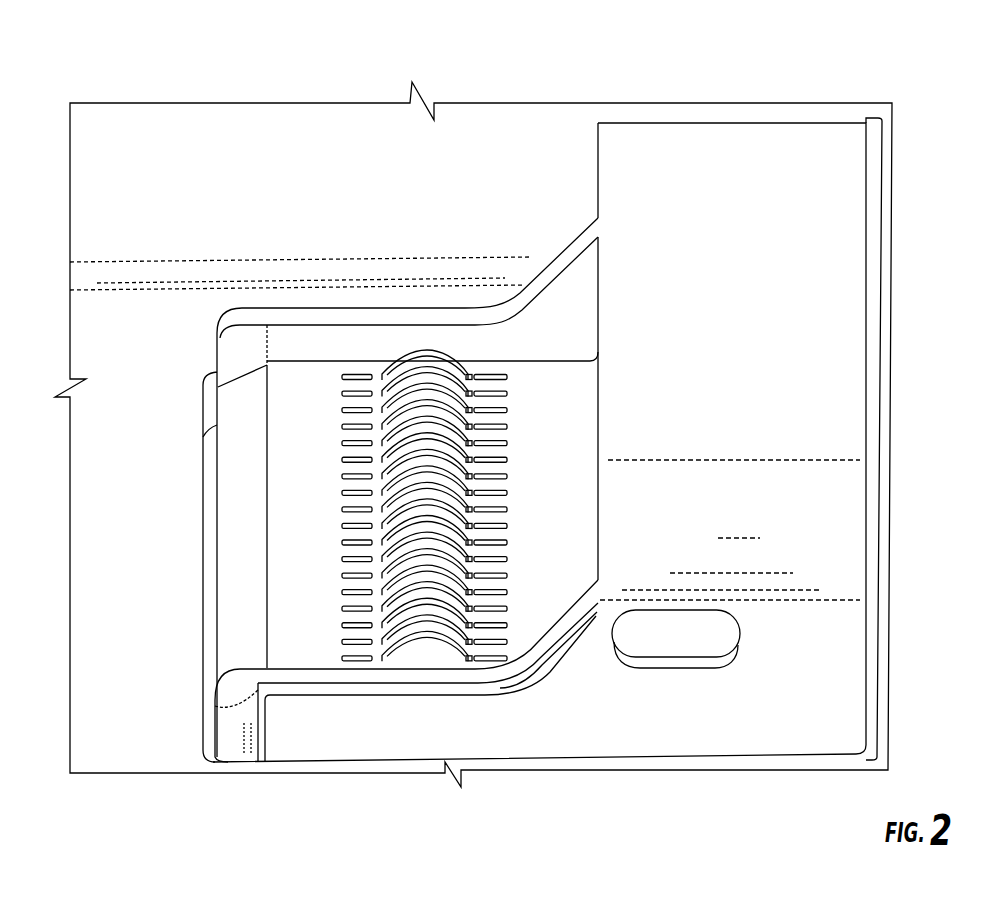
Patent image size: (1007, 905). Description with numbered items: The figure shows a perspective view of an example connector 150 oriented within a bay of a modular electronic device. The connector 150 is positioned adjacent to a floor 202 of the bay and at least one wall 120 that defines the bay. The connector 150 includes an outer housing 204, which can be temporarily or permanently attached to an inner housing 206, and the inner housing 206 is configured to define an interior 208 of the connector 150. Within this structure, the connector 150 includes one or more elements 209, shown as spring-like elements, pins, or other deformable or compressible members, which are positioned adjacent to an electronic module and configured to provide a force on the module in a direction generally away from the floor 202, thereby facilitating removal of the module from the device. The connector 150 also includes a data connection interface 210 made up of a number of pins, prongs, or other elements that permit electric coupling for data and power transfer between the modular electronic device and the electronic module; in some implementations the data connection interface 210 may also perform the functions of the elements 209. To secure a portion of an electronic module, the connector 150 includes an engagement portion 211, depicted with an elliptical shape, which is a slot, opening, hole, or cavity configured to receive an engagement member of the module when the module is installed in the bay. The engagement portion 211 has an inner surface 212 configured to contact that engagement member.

The connector 150 is at (270, 78).
The wall 120 is at (890, 337).
The floor 202 is at (117, 750).
The outer housing 204 is at (820, 560).
The inner housing 206 is at (242, 693).
The interior 208 is at (566, 311).
The element 209 is at (432, 348).
The data connection interface 210 is at (362, 332).
The engagement portion 211 is at (700, 636).
The inner surface 212 is at (668, 612).